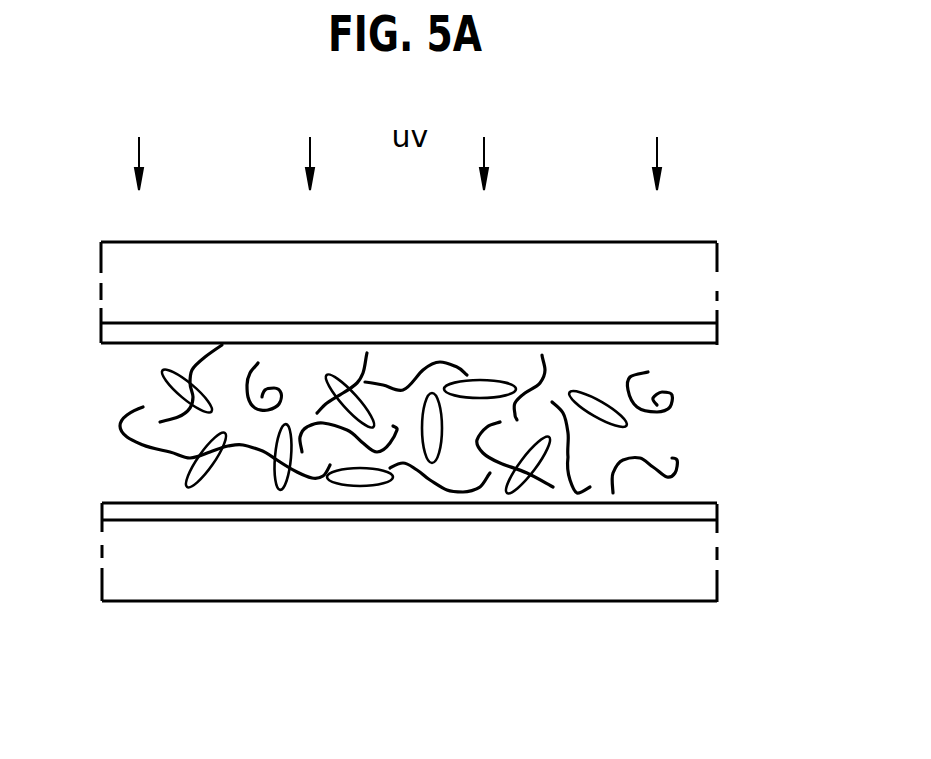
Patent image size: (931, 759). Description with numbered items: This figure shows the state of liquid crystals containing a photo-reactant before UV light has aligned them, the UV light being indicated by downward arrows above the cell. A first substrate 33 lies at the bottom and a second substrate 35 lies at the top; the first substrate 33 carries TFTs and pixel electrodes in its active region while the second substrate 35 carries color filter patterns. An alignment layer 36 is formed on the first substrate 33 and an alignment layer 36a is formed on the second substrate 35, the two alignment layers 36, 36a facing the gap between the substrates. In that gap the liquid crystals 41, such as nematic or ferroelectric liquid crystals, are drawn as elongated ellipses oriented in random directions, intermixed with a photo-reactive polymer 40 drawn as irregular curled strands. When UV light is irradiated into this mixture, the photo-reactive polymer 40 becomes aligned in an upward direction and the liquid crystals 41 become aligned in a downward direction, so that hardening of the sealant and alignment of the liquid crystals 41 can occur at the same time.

The first substrate 33 is at (709, 555).
The second substrate 35 is at (709, 294).
The alignment layer 36 is at (709, 511).
The alignment layer 36a is at (710, 338).
The photo-reactive polymer 40 is at (672, 402).
The liquid crystals 41 is at (627, 427).